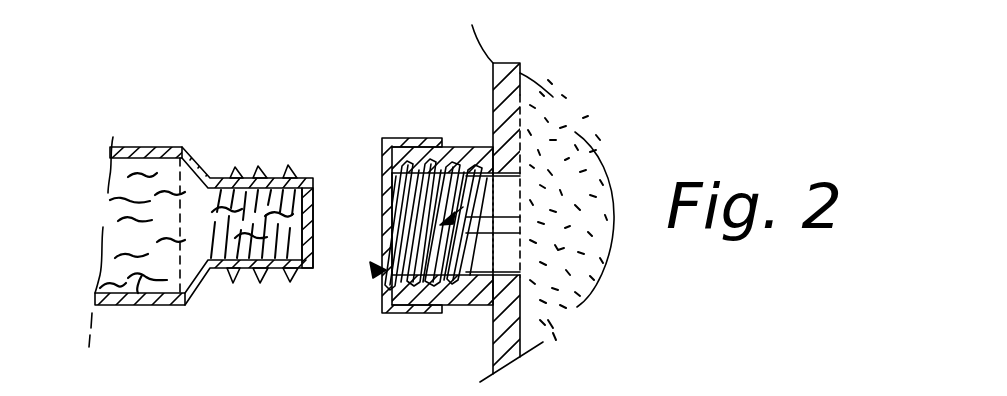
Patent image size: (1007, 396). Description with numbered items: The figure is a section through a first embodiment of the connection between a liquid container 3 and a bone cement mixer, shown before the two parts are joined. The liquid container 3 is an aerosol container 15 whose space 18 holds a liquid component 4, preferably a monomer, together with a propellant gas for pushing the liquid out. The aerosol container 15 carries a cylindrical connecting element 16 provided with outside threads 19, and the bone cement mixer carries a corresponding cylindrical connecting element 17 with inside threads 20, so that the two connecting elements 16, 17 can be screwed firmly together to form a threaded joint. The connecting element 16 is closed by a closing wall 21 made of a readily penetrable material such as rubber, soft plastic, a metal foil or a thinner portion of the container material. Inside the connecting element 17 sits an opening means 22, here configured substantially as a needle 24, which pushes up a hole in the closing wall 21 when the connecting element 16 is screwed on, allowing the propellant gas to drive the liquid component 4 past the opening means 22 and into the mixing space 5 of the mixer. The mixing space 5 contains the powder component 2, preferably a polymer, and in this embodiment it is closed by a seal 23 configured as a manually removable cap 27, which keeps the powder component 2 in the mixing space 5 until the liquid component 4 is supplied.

The powder component 2 is at (575, 178).
The liquid container 3 is at (100, 111).
The liquid component 4 is at (110, 200).
The mixing space 5 is at (520, 125).
The aerosol container 15 is at (158, 110).
The connecting element 16 is at (254, 160).
The corresponding connecting element 17 is at (456, 134).
The space 18 is at (128, 306).
The outside threads 19 is at (290, 173).
The inside threads 20 is at (432, 165).
The closing wall 21 is at (318, 238).
The opening means 22 is at (405, 283).
The seal 23 is at (372, 272).
The needle 24 is at (463, 207).
The manually removable cap 27 is at (388, 180).